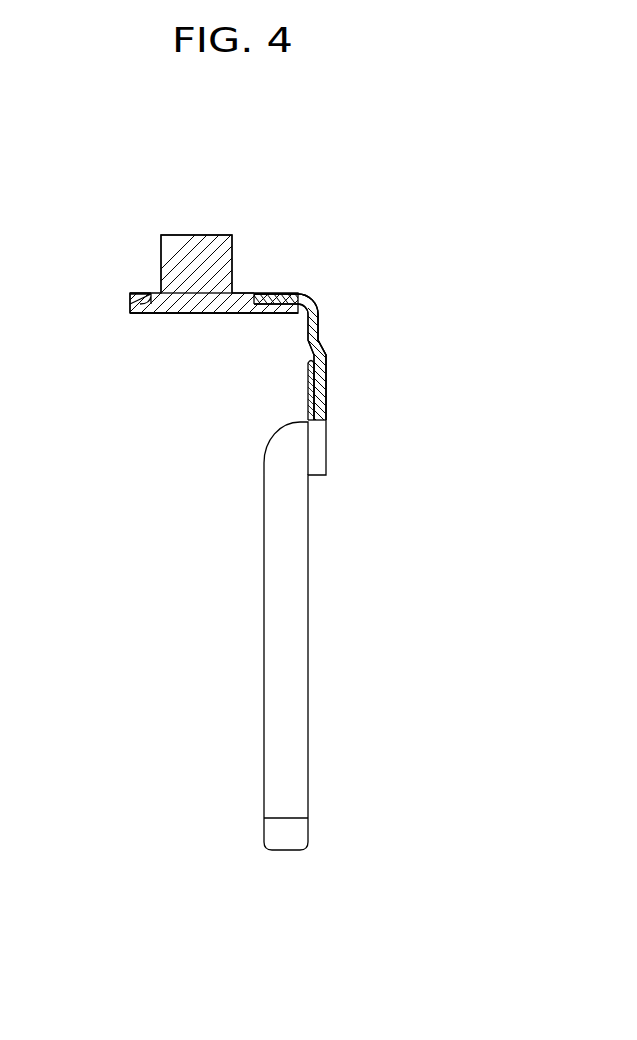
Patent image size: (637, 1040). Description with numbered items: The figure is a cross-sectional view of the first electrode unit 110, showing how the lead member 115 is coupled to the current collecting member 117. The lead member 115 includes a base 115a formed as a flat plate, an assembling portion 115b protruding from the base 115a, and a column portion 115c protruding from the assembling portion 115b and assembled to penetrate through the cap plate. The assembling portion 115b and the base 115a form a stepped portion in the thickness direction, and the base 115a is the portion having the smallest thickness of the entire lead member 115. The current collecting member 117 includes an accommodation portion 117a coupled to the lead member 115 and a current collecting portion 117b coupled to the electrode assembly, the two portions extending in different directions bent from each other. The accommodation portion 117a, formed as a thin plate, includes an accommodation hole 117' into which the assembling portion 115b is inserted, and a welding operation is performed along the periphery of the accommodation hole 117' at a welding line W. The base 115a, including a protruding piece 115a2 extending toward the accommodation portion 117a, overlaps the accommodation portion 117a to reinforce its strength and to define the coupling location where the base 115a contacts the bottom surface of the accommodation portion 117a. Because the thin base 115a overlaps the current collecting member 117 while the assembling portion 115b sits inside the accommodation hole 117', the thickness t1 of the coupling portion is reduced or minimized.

The first electrode unit 110 is at (347, 224).
The lead member 115 is at (146, 228).
The base 115a is at (272, 314).
The protruding piece 115a2 is at (214, 368).
The assembling portion 115b is at (246, 292).
The column portion 115c is at (200, 234).
The current collecting member 117 is at (362, 339).
The accommodation portion 117a is at (288, 293).
The current collecting portion 117b is at (320, 328).
The accommodation hole 117' is at (130, 341).
The welding line W is at (142, 296).
The thickness of the coupling portion t1 is at (130, 293).